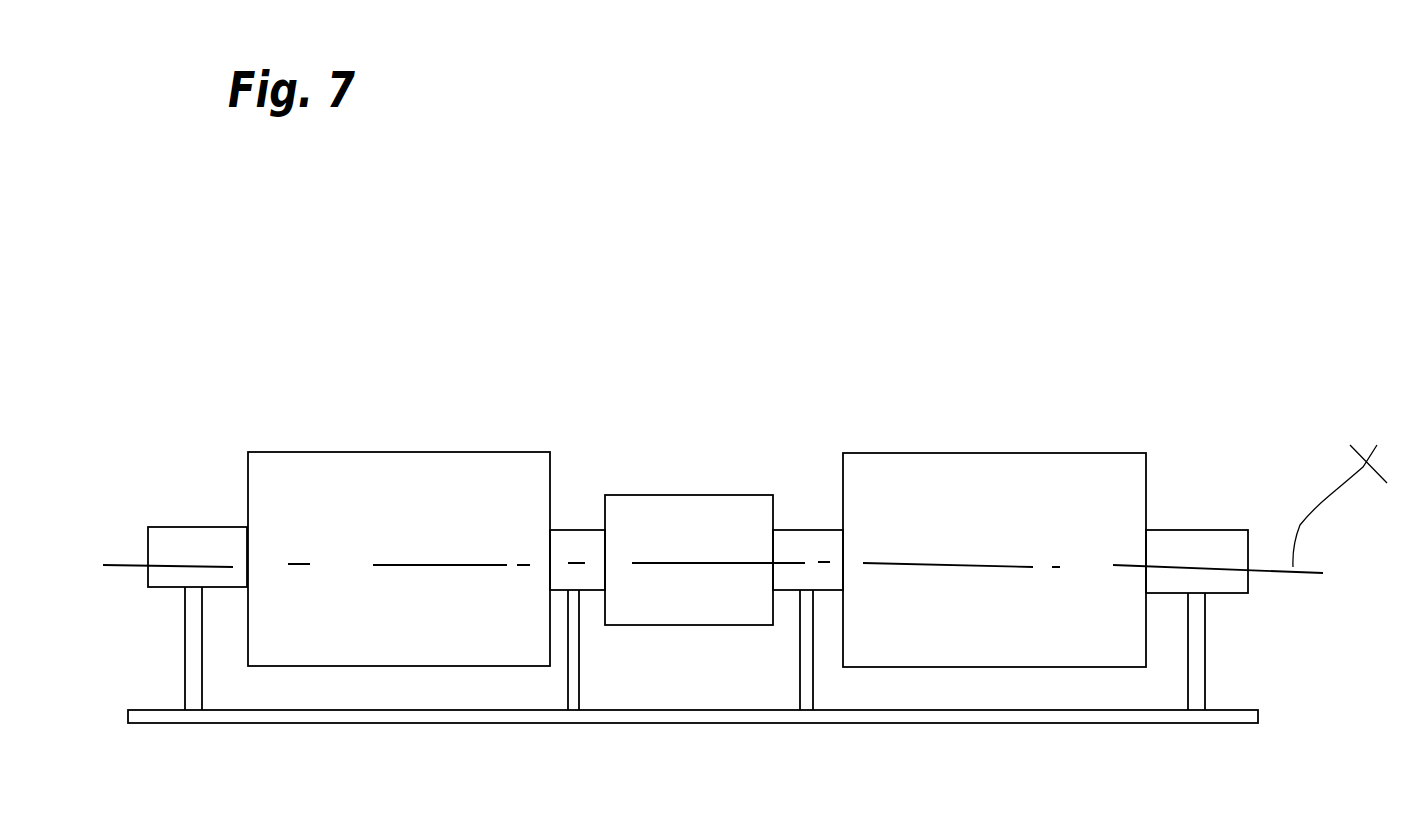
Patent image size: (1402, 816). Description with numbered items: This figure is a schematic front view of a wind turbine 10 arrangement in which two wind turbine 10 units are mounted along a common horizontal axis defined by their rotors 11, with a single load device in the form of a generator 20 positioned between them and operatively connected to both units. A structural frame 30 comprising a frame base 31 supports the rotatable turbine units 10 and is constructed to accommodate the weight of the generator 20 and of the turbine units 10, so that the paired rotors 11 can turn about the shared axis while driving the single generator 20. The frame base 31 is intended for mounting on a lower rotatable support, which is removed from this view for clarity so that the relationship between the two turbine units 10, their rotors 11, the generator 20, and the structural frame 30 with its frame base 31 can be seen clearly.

The wind turbine 10 is at (410, 565).
The rotor 11 is at (190, 527).
The generator 20 is at (700, 578).
The structural frame 30 is at (185, 650).
The frame base 31 is at (1235, 710).